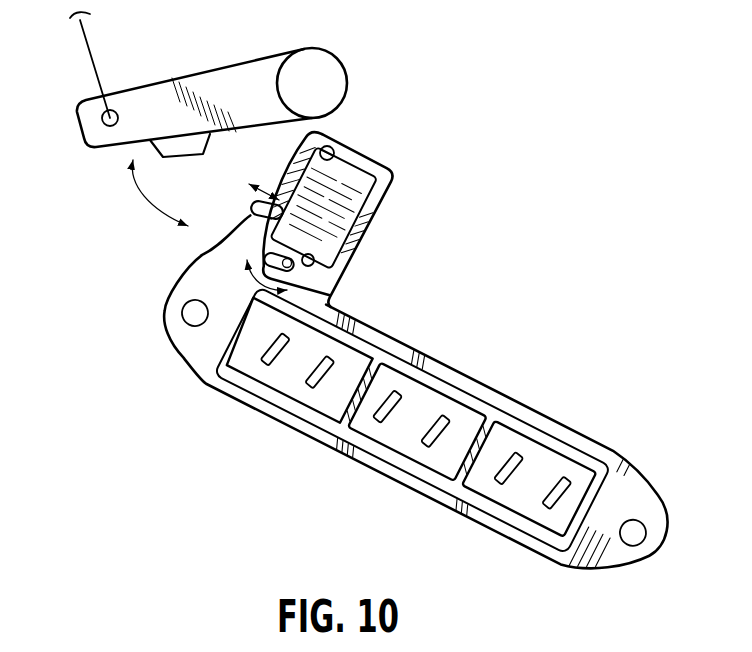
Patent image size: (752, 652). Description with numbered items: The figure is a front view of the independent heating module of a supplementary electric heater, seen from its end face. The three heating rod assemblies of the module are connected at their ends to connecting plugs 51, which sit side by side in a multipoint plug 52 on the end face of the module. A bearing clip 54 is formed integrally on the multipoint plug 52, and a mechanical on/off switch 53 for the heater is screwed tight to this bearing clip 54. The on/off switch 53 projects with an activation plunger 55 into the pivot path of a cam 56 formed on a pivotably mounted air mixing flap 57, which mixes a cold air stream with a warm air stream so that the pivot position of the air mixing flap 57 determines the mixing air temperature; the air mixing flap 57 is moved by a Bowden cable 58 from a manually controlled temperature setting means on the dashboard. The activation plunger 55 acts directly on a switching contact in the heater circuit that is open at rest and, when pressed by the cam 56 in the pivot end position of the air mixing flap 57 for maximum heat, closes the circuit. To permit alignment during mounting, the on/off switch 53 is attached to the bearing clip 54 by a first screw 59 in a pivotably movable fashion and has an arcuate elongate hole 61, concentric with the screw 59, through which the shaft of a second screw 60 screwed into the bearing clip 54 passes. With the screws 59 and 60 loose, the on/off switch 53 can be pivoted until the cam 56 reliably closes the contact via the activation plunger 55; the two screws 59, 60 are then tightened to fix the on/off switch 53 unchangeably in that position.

The connecting plug 51 is at (360, 354).
The multipoint plug 52 is at (203, 352).
The on/off switch 53 is at (333, 198).
The bearing clip 54 is at (380, 203).
The activation plunger 55 is at (258, 207).
The cam 56 is at (200, 142).
The air mixing flap 57 is at (232, 85).
The Bowden cable 58 is at (93, 50).
The first screw 59 is at (330, 146).
The screw 60 is at (290, 257).
The arcuate elongate hole 61 is at (310, 264).